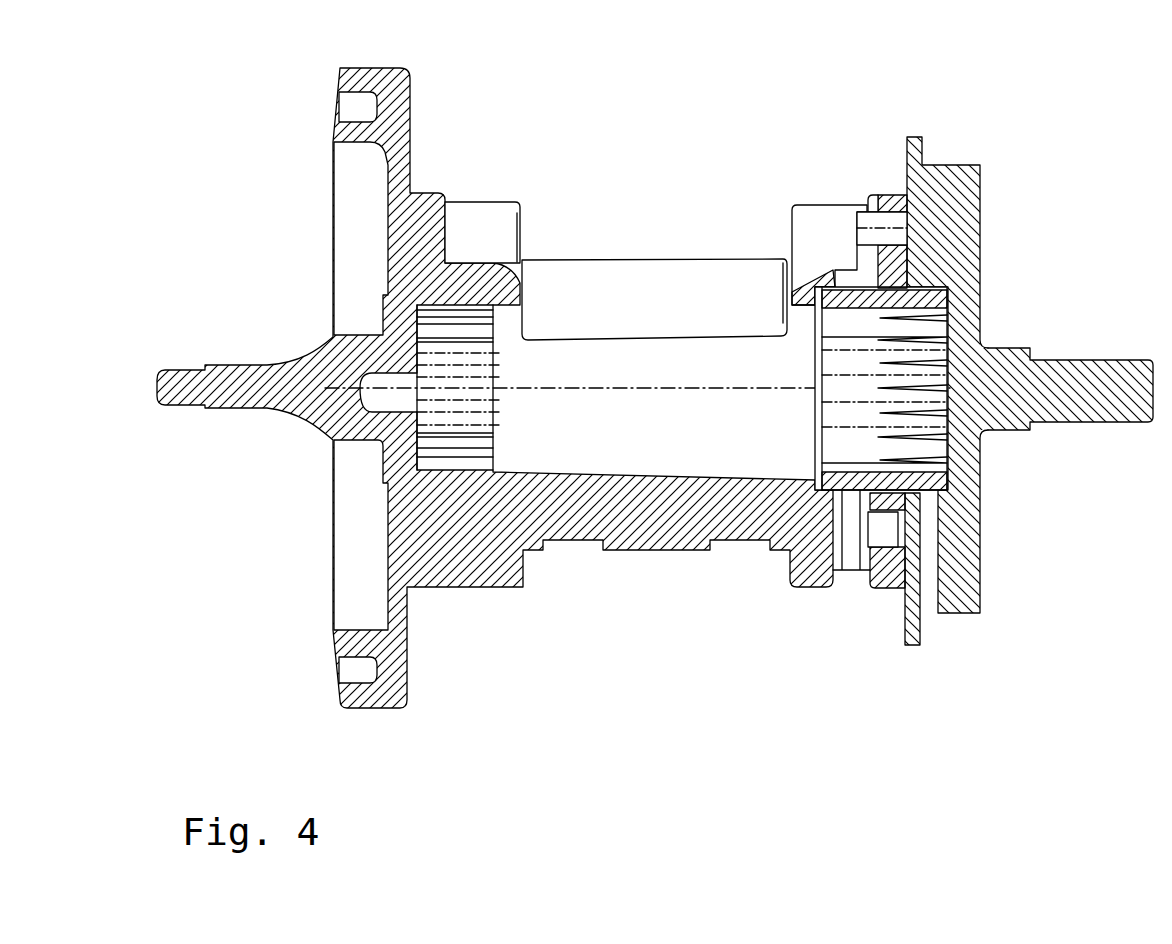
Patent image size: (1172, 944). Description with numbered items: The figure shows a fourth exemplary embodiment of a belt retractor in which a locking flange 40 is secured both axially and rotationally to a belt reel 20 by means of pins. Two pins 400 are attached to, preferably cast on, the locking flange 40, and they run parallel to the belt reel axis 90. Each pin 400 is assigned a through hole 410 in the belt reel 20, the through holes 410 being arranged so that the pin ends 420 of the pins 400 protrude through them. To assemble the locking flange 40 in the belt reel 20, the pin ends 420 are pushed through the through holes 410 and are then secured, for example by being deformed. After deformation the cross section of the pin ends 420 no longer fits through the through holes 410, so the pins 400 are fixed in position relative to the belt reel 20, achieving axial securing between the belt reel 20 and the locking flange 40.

The belt reel 20 is at (417, 217).
The locking flange 40 is at (1015, 365).
The belt reel axis 90 is at (660, 390).
The pin 400 is at (907, 227).
The through hole 410 is at (882, 203).
The pin end 420 is at (855, 225).